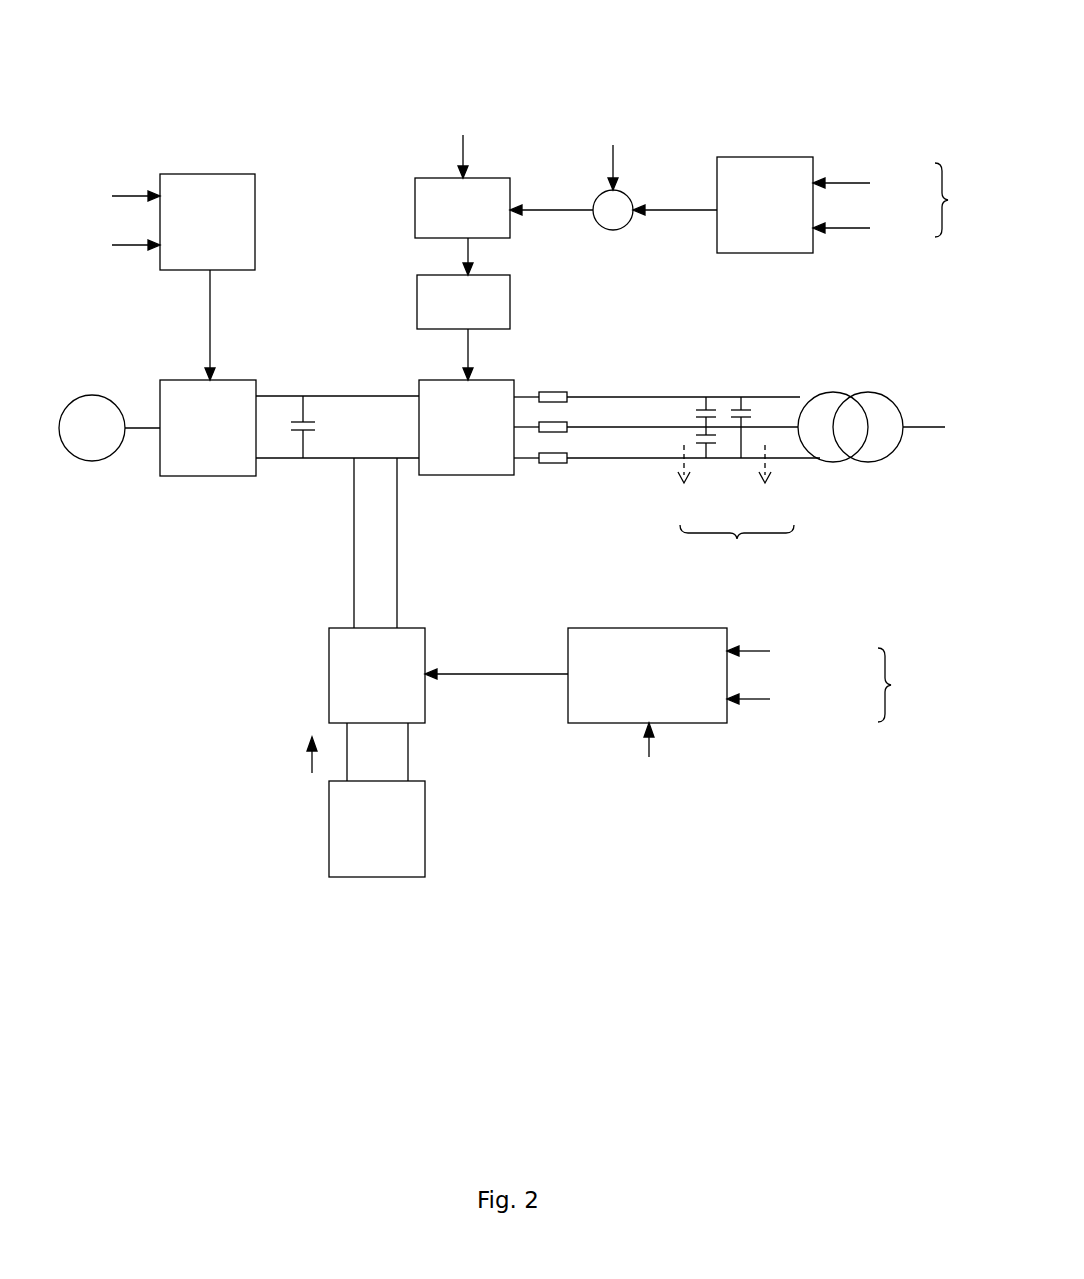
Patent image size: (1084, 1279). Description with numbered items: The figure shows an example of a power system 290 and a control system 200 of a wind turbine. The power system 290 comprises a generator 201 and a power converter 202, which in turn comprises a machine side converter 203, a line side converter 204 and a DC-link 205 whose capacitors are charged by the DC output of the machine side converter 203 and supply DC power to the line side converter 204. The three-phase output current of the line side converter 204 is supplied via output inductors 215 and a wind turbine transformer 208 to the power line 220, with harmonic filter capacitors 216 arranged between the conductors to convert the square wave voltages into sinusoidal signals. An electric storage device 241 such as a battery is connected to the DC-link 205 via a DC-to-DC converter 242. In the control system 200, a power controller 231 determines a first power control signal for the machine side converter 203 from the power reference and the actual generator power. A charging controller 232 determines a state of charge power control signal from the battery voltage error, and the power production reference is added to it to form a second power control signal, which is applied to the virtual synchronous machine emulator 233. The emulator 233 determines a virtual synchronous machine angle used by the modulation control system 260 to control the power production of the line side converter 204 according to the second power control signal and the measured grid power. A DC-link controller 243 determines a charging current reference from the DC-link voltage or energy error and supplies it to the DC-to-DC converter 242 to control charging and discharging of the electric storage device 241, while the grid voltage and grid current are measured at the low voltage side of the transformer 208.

The control system 200 is at (590, 55).
The generator 201 is at (82, 393).
The power converter 202 is at (340, 315).
The machine side converter 203 is at (155, 390).
The line side converter 204 is at (424, 377).
The DC-link 205 is at (298, 403).
The wind turbine transformer 208 is at (842, 392).
The output inductors 215 is at (548, 387).
The harmonic filter capacitors 216 is at (717, 402).
The power line 220 is at (928, 435).
The power controller 231 is at (260, 216).
The charging controller 232 is at (778, 157).
The virtual synchronous machine emulator 233 is at (410, 198).
The electric storage device 241 is at (428, 832).
The DC-to-DC converter 242 is at (323, 673).
The DC-link controller 243 is at (714, 726).
The modulation control system 260 is at (513, 307).
The power system 290 is at (230, 523).